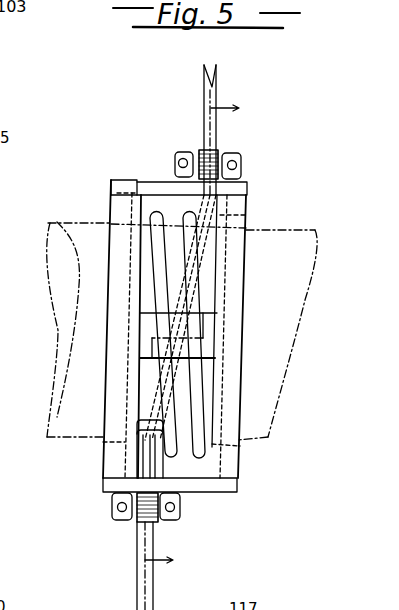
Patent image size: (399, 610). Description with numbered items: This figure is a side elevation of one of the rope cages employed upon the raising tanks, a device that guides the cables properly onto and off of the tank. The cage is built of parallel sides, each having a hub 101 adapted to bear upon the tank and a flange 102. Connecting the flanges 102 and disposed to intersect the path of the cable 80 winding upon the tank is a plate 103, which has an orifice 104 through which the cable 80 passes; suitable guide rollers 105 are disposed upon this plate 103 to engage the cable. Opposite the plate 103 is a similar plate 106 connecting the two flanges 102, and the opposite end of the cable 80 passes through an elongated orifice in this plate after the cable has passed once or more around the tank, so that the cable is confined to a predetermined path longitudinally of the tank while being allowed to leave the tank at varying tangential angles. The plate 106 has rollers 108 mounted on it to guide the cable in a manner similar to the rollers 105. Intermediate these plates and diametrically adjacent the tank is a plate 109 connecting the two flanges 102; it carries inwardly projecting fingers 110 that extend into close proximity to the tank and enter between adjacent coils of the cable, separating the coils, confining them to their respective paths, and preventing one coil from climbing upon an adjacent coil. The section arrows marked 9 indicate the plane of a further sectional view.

The cable 80 is at (213, 85).
The section line 9- 9 is at (202, 336).
The hub 101 is at (120, 220).
The flange 102 is at (120, 183).
The plate 103 is at (172, 183).
The orifice 104 is at (212, 190).
The guide rollers 105 is at (218, 150).
The plate 106 is at (217, 483).
The rollers 108 is at (120, 520).
The plate 109 is at (147, 315).
The inwardly projecting fingers 110 is at (150, 357).